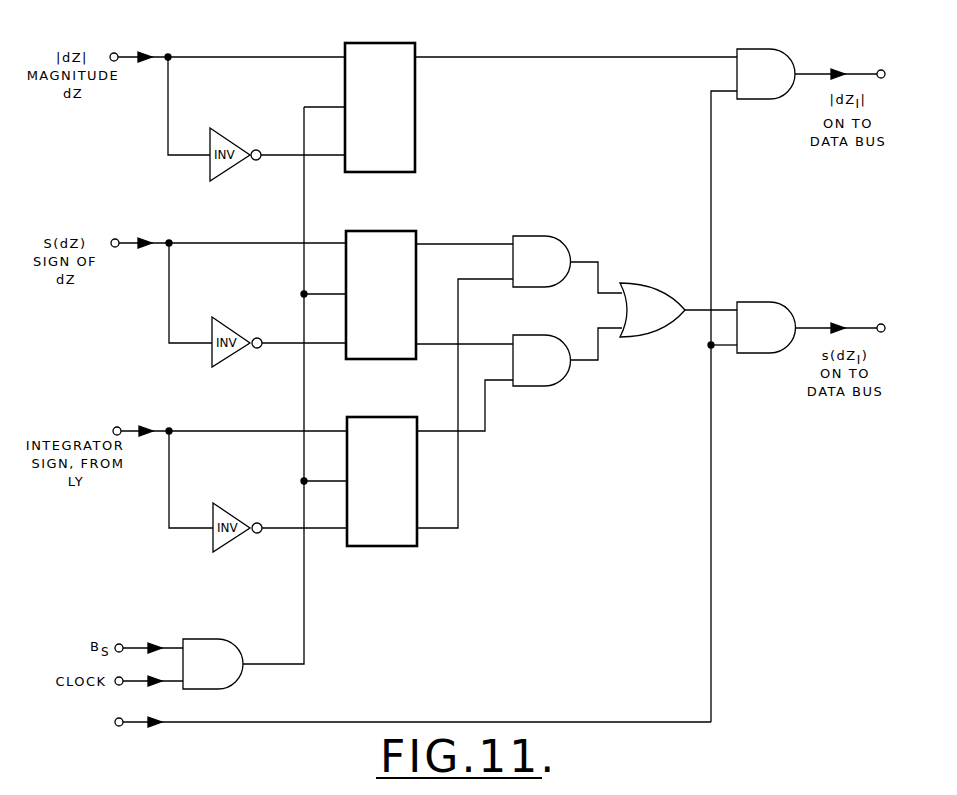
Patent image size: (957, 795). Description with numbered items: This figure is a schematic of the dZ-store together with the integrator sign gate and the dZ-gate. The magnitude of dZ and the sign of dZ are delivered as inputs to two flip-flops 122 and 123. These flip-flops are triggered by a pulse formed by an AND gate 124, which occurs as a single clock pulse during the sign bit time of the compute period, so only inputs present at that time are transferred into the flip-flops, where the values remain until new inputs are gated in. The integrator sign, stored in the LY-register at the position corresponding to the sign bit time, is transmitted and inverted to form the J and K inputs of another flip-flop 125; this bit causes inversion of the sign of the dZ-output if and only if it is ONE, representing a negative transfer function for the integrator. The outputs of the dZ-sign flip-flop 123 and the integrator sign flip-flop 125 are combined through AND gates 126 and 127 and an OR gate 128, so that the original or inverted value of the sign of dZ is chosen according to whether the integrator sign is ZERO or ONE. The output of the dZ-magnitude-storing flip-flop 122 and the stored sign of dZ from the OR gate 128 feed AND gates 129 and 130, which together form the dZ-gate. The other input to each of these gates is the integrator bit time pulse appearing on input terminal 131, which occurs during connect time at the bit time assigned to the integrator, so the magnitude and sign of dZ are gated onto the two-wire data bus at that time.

The flip-flop 122 is at (416, 102).
The flip-flop 123 is at (382, 229).
The AND gate 124 is at (232, 639).
The flip-flop 125 is at (382, 548).
The AND gate 126 is at (563, 238).
The AND gate 127 is at (563, 384).
The OR gate 128 is at (650, 283).
The AND gate 129 is at (760, 99).
The AND gate 130 is at (775, 302).
The input terminal 131 is at (122, 725).